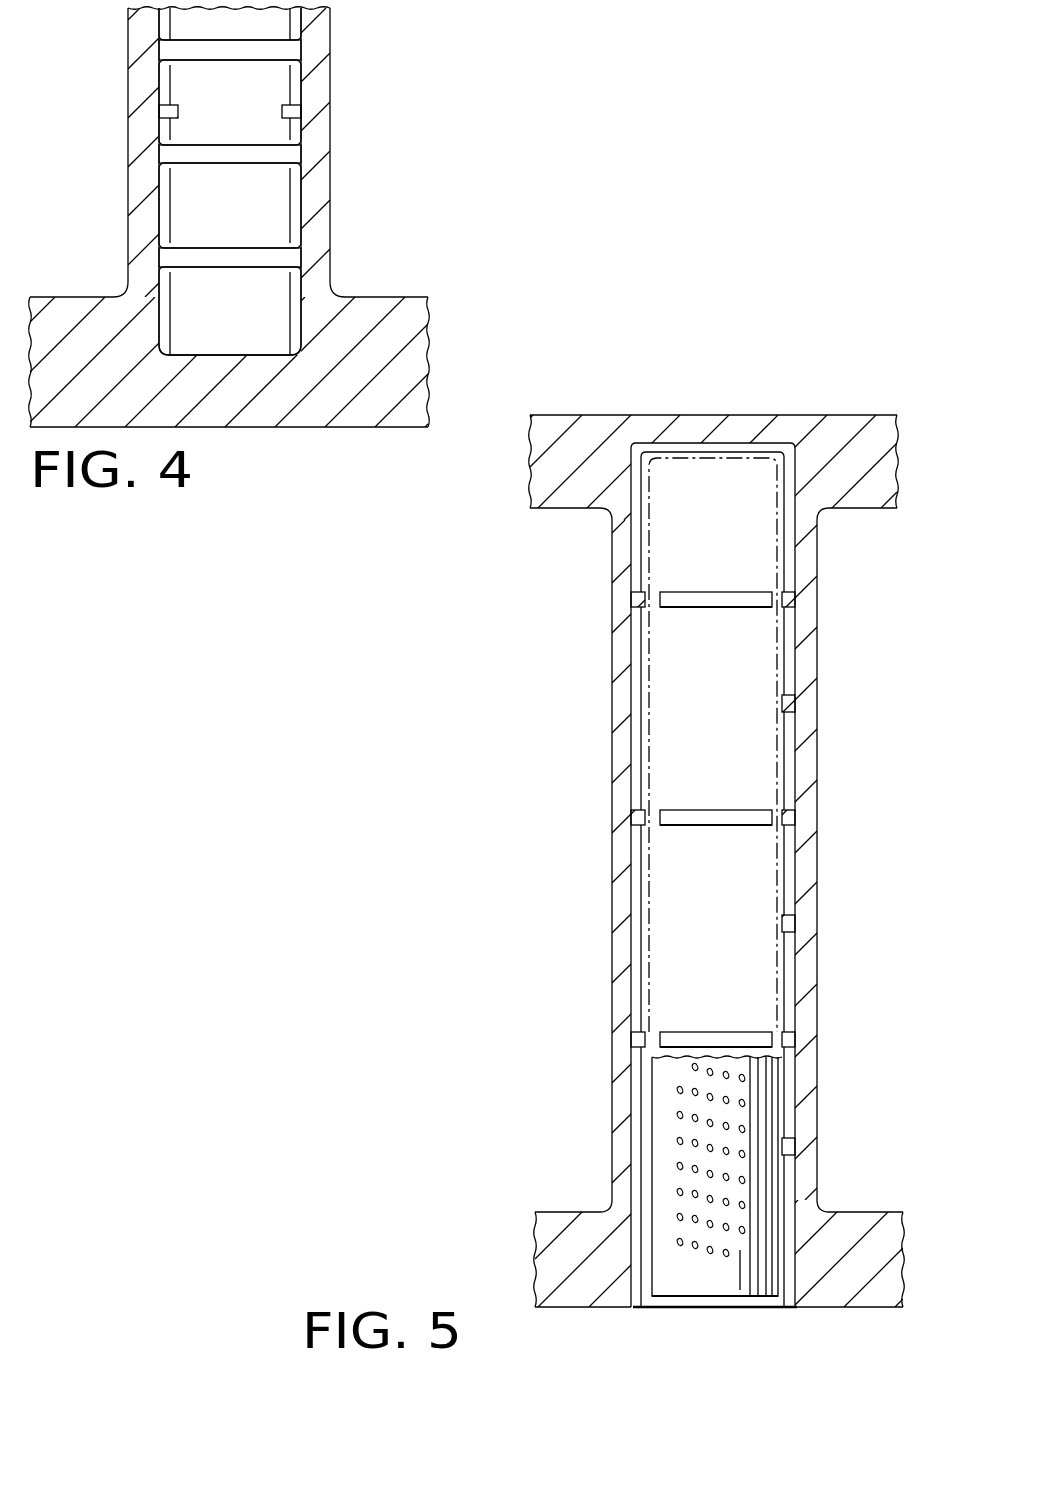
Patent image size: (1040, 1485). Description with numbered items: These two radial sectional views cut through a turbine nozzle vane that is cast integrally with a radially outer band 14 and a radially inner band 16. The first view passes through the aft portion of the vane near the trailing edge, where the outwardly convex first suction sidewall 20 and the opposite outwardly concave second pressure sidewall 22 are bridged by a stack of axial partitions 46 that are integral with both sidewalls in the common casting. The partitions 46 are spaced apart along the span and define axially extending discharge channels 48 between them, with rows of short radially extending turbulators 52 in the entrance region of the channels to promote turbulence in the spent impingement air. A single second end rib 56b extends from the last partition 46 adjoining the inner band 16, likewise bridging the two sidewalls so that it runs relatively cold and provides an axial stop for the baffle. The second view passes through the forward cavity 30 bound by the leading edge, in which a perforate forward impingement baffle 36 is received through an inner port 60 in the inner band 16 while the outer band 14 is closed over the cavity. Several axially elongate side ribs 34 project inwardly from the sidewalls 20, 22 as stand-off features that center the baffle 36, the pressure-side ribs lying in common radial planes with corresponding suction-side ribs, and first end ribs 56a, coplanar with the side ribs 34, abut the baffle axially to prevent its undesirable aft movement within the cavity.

In FIG. 5, the outer band 14 is at (854, 414).
In FIG. 4, the inner band 16 is at (376, 303).
In FIG. 5, the inner band 16 is at (850, 1225).
In FIG. 4, the first suction sidewall 20 is at (330, 192).
In FIG. 5, the first suction sidewall 20 is at (817, 767).
In FIG. 4, the second pressure sidewall 22 is at (128, 202).
In FIG. 5, the second pressure sidewall 22 is at (612, 763).
In FIG. 5, the forward cavity 30 is at (790, 1172).
In FIG. 4, the side ribs 34 is at (283, 105).
In FIG. 5, the side ribs 34 is at (787, 827).
In FIG. 5, the forward impingement baffle 36 is at (723, 1286).
In FIG. 4, the trailing edge partitions 46 is at (217, 50).
In FIG. 4, the discharge channels 48 is at (245, 215).
In FIG. 4, the turbulators 52 is at (287, 21).
In FIG. 5, the first end ribs 56a is at (682, 808).
In FIG. 4, the second end rib 56b is at (261, 262).
In FIG. 5, the inner port 60 is at (642, 1308).